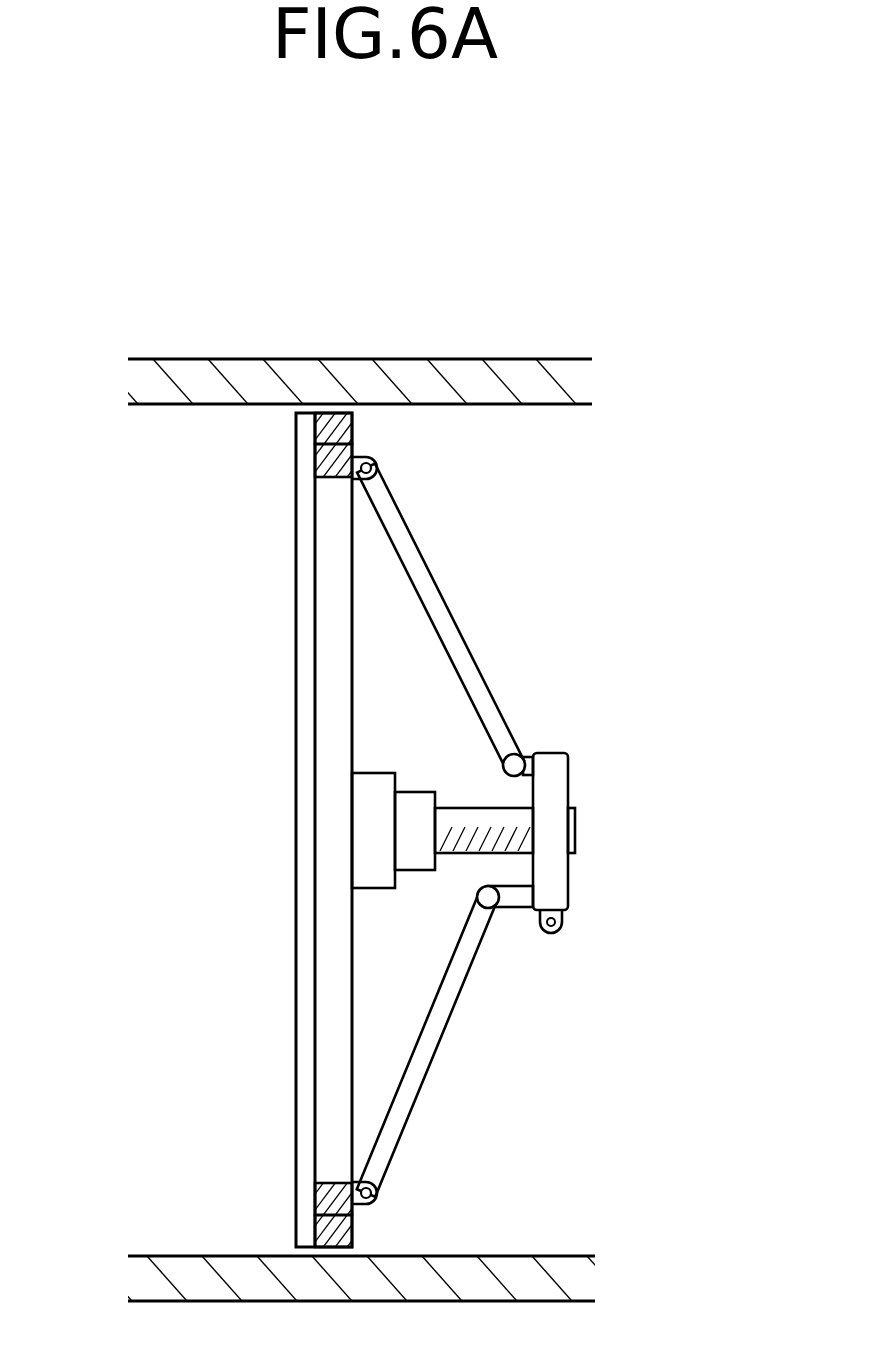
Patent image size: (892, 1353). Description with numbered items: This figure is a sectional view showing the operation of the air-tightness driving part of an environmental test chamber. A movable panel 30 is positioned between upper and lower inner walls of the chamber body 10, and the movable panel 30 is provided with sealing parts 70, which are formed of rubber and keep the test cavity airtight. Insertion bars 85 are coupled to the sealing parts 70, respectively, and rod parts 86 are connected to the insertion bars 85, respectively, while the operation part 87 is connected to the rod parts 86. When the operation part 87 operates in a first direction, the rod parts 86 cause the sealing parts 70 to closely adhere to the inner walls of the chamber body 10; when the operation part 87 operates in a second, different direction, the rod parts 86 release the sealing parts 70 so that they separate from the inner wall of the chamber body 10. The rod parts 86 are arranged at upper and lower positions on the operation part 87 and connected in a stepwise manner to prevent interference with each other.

The chamber body 10 is at (497, 392).
The movable panel 30 is at (312, 815).
The sealing part 70 is at (323, 430).
The insertion bar 85 is at (330, 463).
The rod part 86 is at (440, 607).
The operation part 87 is at (555, 795).